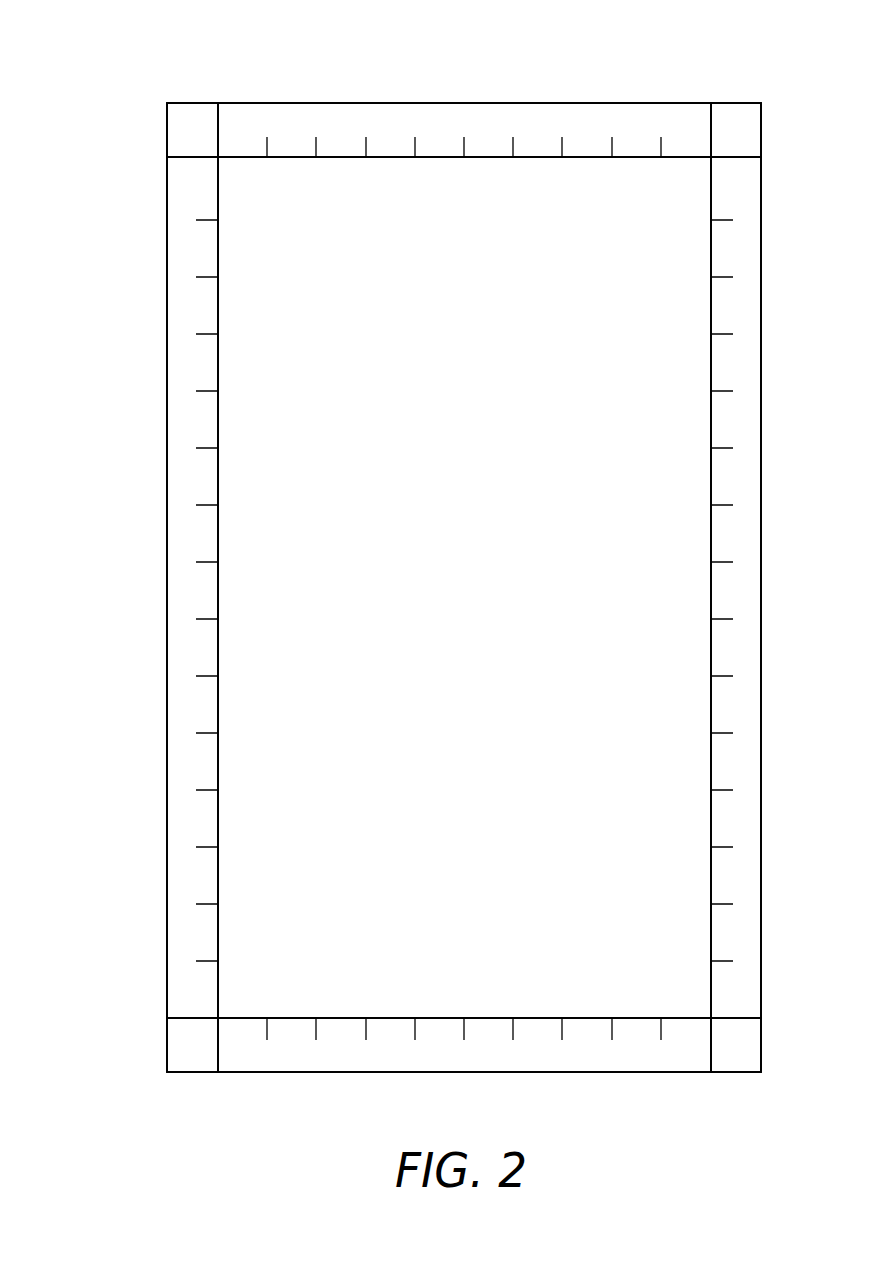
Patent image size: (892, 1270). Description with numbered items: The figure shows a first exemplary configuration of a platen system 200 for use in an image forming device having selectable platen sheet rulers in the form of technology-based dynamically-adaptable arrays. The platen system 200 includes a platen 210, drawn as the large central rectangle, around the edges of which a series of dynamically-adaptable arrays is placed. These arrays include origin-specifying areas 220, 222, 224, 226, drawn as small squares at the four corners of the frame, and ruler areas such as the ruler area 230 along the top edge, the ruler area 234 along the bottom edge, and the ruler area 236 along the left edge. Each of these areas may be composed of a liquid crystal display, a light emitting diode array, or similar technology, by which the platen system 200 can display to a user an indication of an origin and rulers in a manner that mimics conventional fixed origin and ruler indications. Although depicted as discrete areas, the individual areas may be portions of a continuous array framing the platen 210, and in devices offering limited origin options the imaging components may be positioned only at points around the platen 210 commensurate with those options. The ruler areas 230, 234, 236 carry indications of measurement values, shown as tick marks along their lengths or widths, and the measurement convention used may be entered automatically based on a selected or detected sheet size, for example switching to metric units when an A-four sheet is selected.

The platen system 200 is at (162, 47).
The platen 210 is at (481, 508).
The origin-specifying area 220 is at (192, 105).
The origin-specifying area 222 is at (725, 103).
The origin-specifying area 224 is at (733, 1073).
The origin-specifying area 226 is at (200, 1073).
The ruler area 230 is at (342, 103).
The ruler area 234 is at (295, 1073).
The ruler area 236 is at (168, 220).